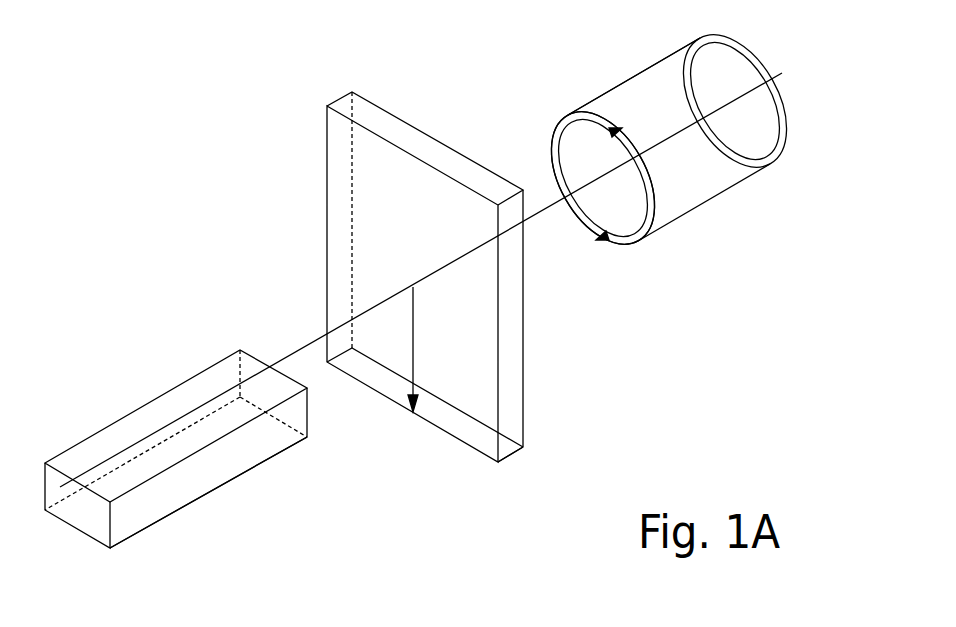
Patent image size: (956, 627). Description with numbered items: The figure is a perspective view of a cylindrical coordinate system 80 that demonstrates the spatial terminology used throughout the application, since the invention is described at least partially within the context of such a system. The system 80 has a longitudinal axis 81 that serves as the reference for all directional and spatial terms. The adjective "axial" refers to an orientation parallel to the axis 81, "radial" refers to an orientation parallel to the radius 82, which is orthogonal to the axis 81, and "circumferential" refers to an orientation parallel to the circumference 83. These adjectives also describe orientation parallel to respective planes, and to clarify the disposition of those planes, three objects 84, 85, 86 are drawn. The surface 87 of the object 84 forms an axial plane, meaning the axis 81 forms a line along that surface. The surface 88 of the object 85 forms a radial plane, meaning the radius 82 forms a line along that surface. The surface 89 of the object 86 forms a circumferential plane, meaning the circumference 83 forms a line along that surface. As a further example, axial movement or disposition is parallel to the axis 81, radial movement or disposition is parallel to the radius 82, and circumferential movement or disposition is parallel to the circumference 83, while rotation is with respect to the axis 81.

The cylindrical coordinate system 80 is at (275, 148).
The longitudinal axis 81 is at (762, 70).
The radius 82 is at (413, 342).
The circumference 83 is at (551, 138).
The object 84 is at (137, 532).
The object 85 is at (540, 457).
The object 86 is at (700, 216).
The surface 87 is at (133, 428).
The surface 88 is at (343, 232).
The surface 89 is at (633, 76).